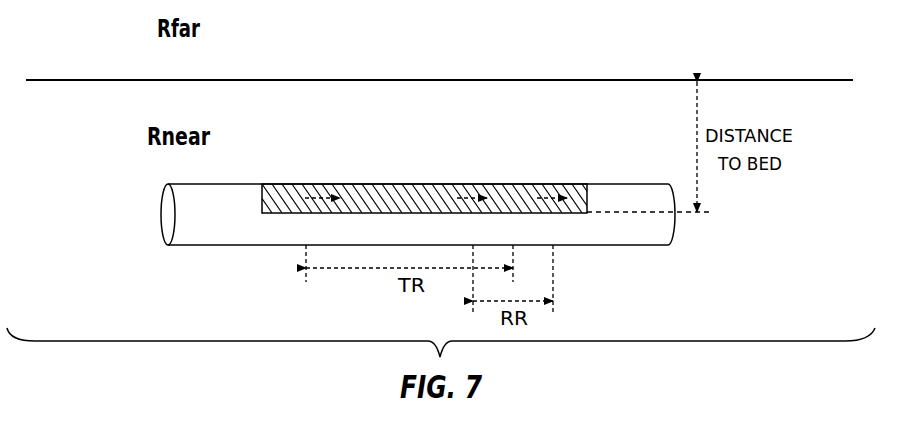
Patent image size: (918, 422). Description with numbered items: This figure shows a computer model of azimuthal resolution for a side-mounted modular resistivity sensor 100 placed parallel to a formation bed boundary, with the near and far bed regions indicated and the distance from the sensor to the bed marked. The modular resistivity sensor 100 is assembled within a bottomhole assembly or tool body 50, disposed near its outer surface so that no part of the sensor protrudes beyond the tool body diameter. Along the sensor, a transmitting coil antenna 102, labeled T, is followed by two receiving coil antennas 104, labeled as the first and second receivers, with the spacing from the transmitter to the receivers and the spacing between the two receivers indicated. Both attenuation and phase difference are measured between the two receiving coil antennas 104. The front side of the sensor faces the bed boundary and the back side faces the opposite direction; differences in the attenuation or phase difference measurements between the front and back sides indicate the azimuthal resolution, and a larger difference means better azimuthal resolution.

The tool body 50 is at (621, 247).
The modular resistivity sensor 100 is at (283, 183).
The transmitting coil antenna 102 is at (322, 158).
The receiving coil antennas 104 is at (472, 158).